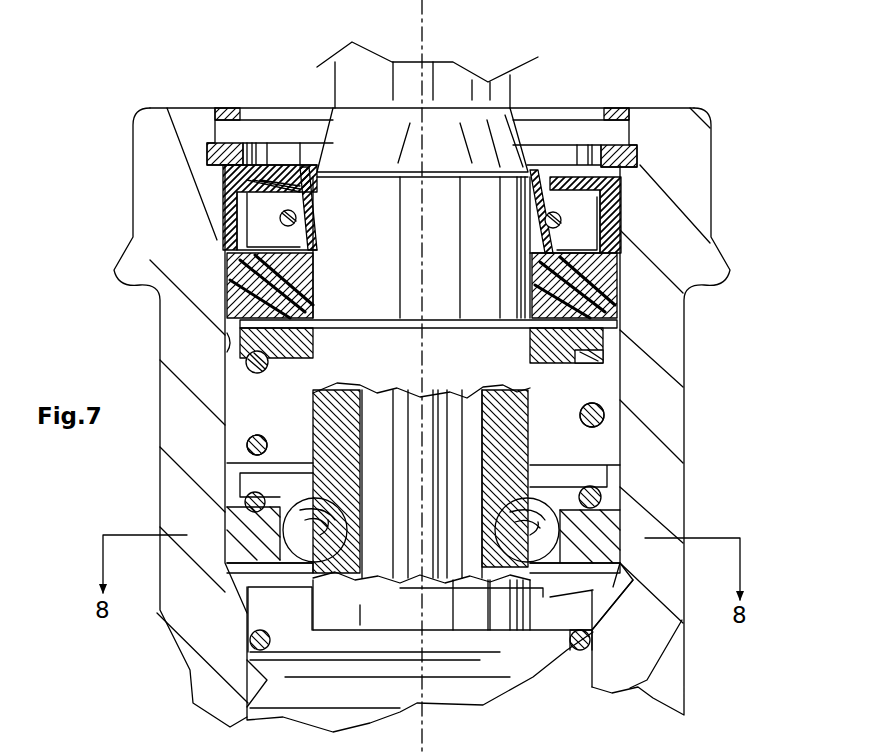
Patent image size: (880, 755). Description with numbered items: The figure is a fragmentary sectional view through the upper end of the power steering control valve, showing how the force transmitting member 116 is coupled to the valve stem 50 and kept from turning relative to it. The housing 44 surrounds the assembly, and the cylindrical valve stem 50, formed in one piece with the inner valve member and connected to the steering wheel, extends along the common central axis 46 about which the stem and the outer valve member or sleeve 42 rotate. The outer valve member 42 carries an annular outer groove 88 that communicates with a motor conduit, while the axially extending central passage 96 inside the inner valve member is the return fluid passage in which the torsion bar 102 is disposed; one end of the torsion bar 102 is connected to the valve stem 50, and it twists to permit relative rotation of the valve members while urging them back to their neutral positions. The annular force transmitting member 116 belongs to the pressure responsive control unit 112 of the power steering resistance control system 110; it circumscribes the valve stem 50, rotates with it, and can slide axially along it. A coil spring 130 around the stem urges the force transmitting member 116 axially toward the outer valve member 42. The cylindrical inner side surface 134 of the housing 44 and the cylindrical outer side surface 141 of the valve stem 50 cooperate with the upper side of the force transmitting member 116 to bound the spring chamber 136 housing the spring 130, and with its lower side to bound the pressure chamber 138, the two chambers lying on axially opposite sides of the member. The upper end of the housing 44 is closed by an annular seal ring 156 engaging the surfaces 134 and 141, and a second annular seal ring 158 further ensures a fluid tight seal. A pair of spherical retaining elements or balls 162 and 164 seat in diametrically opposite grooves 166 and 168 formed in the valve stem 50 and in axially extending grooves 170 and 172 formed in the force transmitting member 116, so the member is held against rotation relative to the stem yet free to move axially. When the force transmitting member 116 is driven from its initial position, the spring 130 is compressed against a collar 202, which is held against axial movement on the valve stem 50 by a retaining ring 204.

The outer valve member 42 is at (527, 690).
The housing 44 is at (153, 188).
The central axis 46 is at (420, 28).
The valve stem 50 is at (490, 97).
The annular outer groove 88 is at (257, 680).
The central passage 96 is at (377, 422).
The torsion bar 102 is at (400, 413).
The power steering resistance control system 110 is at (615, 433).
The pressure responsive control unit 112 is at (603, 382).
The force transmitting member 116 is at (613, 528).
The coil spring 130 is at (250, 440).
The inner side surface of the housing 134 is at (227, 330).
The spring chamber 136 is at (233, 390).
The pressure chamber 138 is at (243, 573).
The outer side surface of the valve stem 141 is at (604, 398).
The annular seal ring 156 is at (620, 273).
The second annular seal ring 158 is at (607, 193).
The spherical retaining element 162 is at (303, 525).
The spherical retaining element 164 is at (560, 528).
The groove in the valve stem 166 is at (300, 458).
The groove in the valve stem 168 is at (513, 492).
The axially extending groove 170 is at (233, 547).
The axially extending groove 172 is at (600, 580).
The collar 202 is at (617, 333).
The retaining ring 204 is at (327, 316).